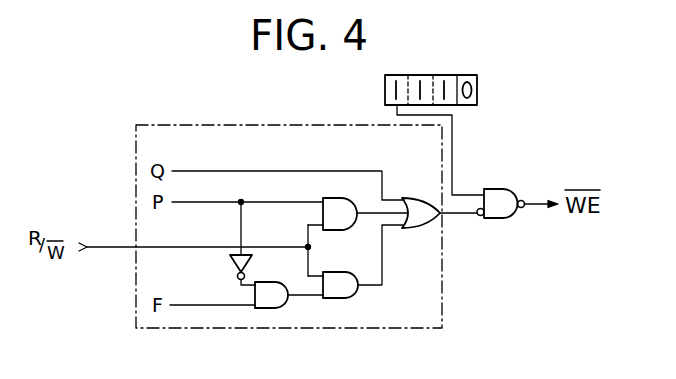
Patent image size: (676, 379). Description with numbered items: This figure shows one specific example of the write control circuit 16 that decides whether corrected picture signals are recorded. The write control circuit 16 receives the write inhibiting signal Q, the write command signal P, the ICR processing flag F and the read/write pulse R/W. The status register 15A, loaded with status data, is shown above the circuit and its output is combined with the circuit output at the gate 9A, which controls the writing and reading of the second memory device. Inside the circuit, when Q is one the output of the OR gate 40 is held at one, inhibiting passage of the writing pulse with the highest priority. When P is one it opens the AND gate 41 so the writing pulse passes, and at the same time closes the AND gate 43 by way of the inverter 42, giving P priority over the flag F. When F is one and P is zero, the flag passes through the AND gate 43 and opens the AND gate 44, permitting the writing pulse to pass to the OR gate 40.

The write control circuit 16 is at (143, 122).
The status register 15A is at (385, 87).
The AND gate 41 is at (358, 203).
The inverter 42 is at (231, 262).
The AND gate 43 is at (283, 307).
The AND gate 44 is at (360, 295).
The OR gate 40 is at (424, 230).
The gate 9A is at (510, 219).